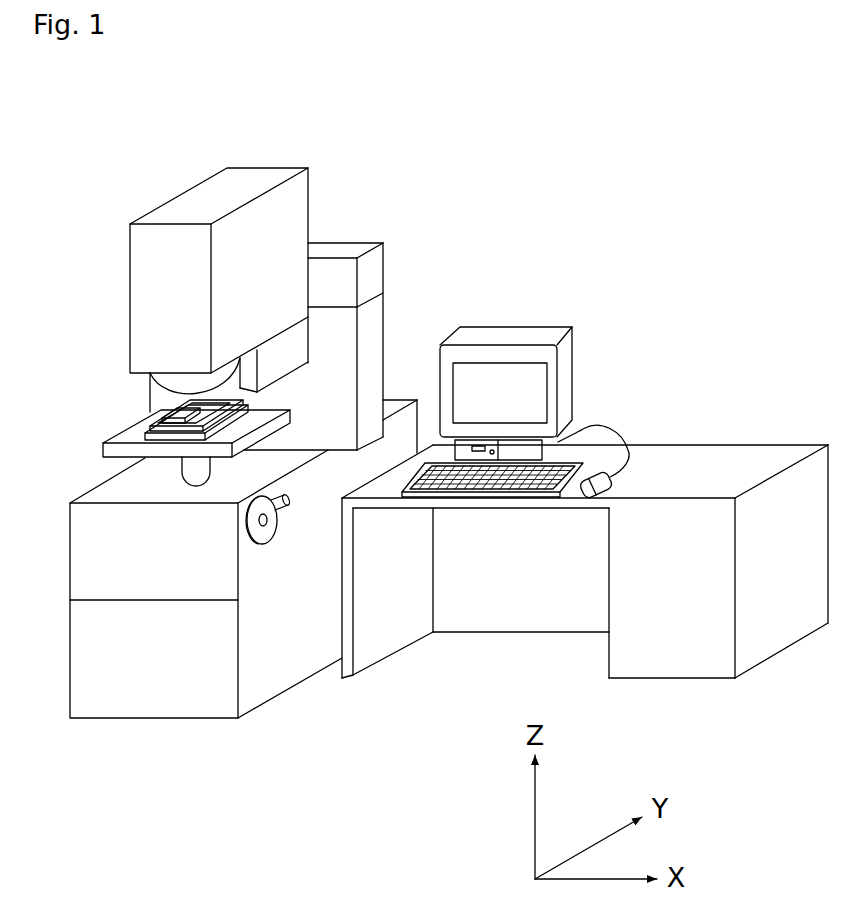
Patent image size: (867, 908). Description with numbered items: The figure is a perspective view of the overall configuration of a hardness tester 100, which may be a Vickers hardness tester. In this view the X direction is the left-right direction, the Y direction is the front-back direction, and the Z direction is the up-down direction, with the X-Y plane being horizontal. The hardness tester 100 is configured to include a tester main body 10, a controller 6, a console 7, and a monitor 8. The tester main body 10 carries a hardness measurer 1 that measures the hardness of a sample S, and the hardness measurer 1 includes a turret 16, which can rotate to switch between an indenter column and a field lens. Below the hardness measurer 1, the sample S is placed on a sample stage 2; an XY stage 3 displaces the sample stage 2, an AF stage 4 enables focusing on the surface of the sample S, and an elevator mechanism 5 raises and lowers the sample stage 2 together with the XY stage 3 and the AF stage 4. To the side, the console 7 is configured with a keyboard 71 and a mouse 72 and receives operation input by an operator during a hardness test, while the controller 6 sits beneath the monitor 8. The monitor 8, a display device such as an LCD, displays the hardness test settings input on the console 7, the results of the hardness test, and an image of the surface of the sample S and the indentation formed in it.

The hardness tester 100 is at (582, 183).
The tester main body 10 is at (415, 232).
The hardness measurer 1 is at (198, 205).
The turret 16 is at (185, 378).
The sample S is at (187, 422).
The sample stage 2 is at (148, 430).
The AF stage 4 is at (148, 438).
The XY stage 3 is at (102, 448).
The elevator mechanism 5 is at (195, 477).
The monitor 8 is at (518, 335).
The controller 6 is at (563, 440).
The console 7 is at (585, 565).
The keyboard 71 is at (475, 498).
The mouse 72 is at (583, 499).